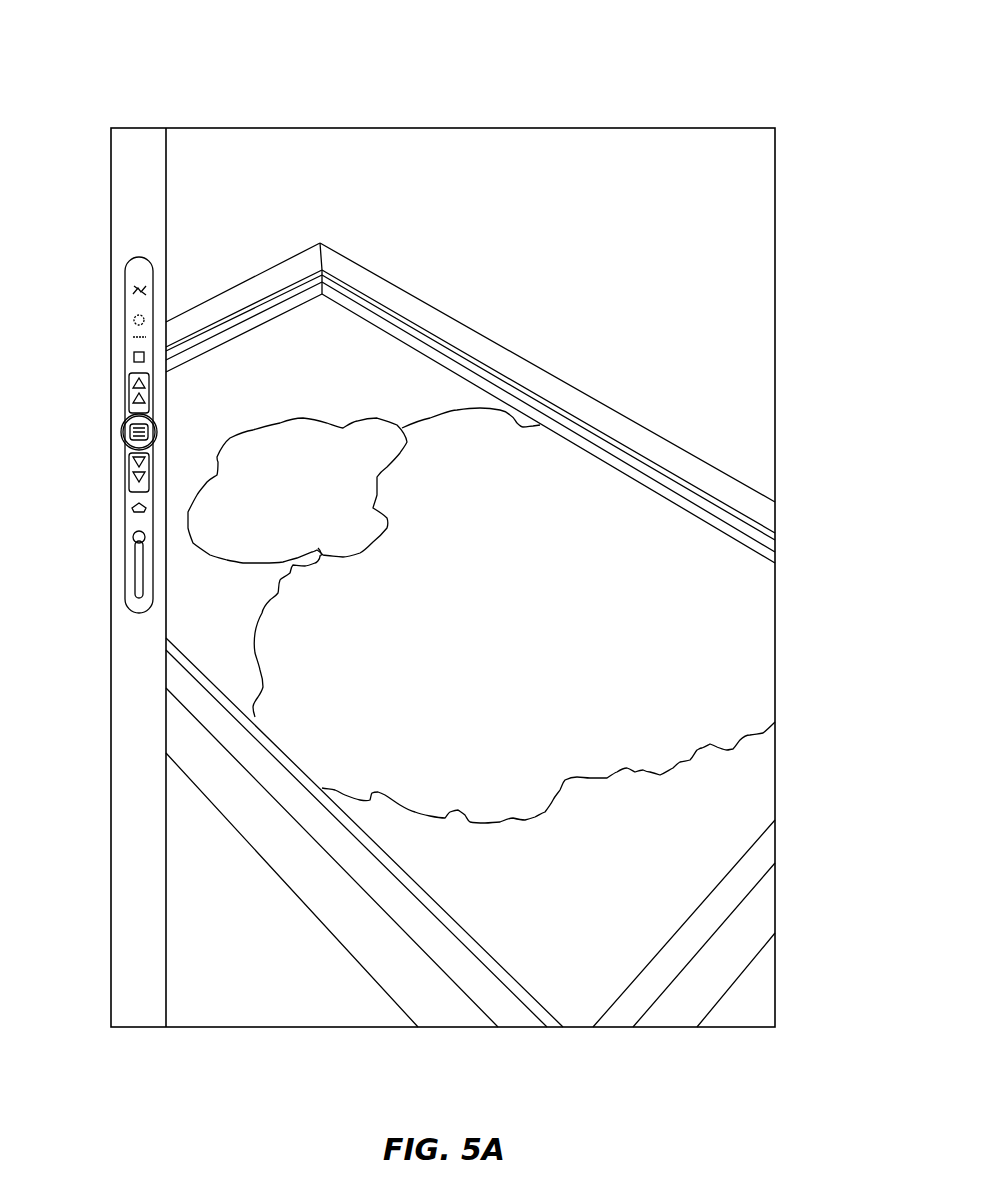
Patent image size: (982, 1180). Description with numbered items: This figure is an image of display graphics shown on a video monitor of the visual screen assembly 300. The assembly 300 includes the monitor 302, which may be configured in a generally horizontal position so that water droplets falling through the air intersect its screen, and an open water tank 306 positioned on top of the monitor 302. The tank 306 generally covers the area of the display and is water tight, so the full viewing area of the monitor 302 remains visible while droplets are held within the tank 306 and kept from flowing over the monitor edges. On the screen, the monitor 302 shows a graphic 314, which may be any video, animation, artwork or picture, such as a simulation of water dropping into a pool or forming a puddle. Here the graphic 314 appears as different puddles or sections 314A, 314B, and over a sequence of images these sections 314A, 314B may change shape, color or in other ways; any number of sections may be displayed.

The visual screen assembly 300 is at (196, 66).
The monitor 302 is at (203, 615).
The open water tank 306 is at (245, 282).
The graphic 314 is at (544, 615).
The section 314A is at (545, 636).
The section 314B is at (323, 507).